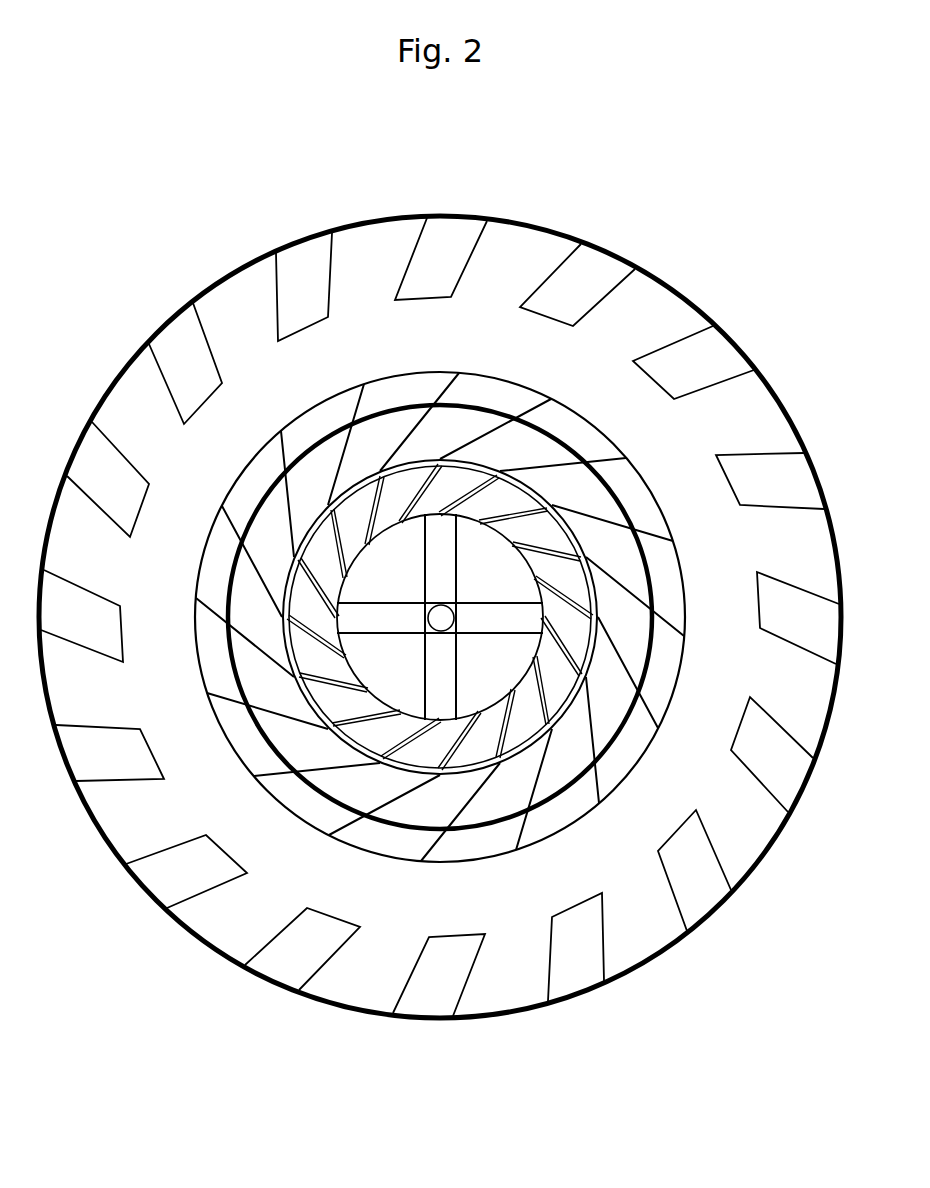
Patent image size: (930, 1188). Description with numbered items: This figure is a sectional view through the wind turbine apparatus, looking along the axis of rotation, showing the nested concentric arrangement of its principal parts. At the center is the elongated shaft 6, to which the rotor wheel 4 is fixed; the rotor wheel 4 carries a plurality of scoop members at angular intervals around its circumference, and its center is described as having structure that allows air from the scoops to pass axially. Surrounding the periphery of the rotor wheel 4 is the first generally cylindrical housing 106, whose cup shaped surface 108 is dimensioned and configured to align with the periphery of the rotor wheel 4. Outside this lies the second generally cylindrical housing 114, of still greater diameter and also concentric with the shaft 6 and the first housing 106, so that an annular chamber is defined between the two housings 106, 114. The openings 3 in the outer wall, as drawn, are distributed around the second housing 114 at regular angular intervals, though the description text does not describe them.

The second generally cylindrical housing 114 is at (668, 283).
The outlet slots 3 is at (697, 365).
The cup shaped surface 108 is at (413, 388).
The first generally cylindrical housing 106 is at (384, 826).
The rotor wheel 4 is at (552, 594).
The elongated shaft 6 is at (441, 618).